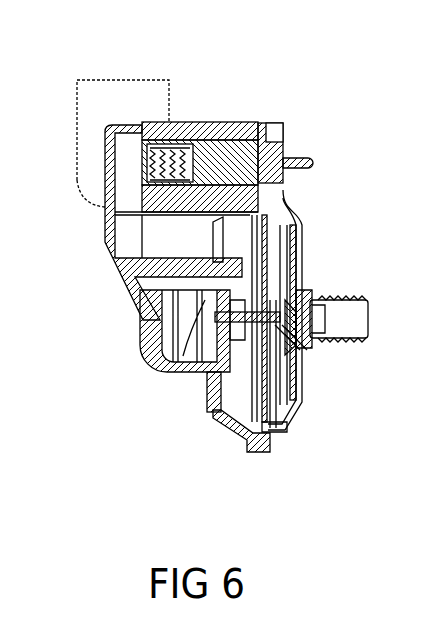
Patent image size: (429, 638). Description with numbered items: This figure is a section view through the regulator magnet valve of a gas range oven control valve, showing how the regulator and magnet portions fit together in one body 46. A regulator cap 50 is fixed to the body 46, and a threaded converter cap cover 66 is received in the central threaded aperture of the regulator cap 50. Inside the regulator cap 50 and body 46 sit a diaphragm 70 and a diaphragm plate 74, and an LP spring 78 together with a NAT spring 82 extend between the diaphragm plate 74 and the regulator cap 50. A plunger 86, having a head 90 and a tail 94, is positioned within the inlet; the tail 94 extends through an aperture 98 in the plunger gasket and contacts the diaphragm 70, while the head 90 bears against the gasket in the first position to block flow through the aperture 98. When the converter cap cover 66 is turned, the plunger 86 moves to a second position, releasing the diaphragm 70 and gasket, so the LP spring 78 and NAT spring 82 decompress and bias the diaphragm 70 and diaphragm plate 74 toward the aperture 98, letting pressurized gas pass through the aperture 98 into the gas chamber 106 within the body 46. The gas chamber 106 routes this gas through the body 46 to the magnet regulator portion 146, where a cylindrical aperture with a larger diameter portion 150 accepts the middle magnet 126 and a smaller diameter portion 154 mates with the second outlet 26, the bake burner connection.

The second outlet 26 is at (127, 90).
The body 46 is at (132, 278).
The regulator cap 50 is at (300, 220).
The converter cap cover 66 is at (356, 292).
The diaphragm 70 is at (283, 422).
The diaphragm plate 74 is at (297, 413).
The LP spring 78 is at (303, 262).
The NAT spring 82 is at (213, 413).
The plunger 86 is at (228, 388).
The head 90 is at (163, 361).
The tail 94 is at (295, 343).
The aperture 98 is at (197, 370).
The gas chamber 106 is at (130, 238).
The middle magnet 126 is at (288, 160).
The magnet regulator portion 146 is at (232, 122).
The larger diameter portion 150 is at (179, 122).
The smaller diameter portion 154 is at (140, 168).